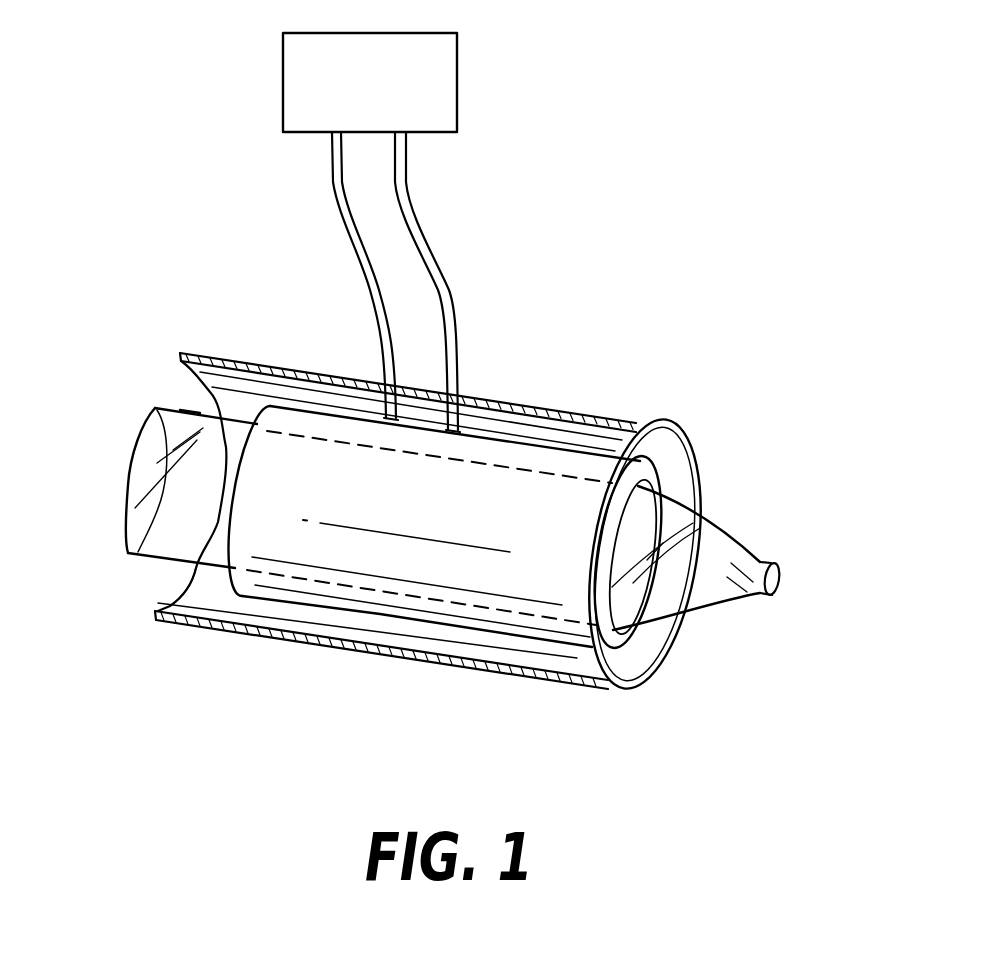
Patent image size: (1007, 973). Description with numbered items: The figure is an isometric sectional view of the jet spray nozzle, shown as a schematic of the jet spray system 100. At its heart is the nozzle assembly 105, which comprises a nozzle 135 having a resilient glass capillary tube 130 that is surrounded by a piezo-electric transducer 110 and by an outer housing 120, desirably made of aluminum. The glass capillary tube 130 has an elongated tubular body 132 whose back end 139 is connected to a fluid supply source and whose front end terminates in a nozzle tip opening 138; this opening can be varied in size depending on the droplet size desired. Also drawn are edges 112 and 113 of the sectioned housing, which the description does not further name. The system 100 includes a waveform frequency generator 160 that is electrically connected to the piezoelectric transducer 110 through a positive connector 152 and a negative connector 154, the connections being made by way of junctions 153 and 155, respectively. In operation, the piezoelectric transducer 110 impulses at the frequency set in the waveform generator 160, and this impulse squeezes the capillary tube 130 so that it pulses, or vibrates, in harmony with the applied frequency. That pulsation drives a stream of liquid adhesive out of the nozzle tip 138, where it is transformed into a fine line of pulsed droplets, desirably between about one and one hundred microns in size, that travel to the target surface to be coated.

The jet spray system 100 is at (648, 176).
The nozzle assembly 105 is at (630, 411).
The piezo-electric transducer 110 is at (638, 426).
The lower tube edge 112 is at (598, 626).
The upper tube edge 113 is at (232, 582).
The outer housing 120 is at (538, 407).
The glass capillary tube 130 is at (662, 491).
The elongated tubular body 132 is at (177, 558).
The nozzle 135 is at (730, 533).
The nozzle tip opening 138 is at (782, 580).
The back end 139 is at (190, 411).
The positive connector 152 is at (437, 291).
The junction 153 is at (457, 430).
The negative connector 154 is at (370, 290).
The junction 155 is at (383, 418).
The waveform frequency generator 160 is at (457, 83).